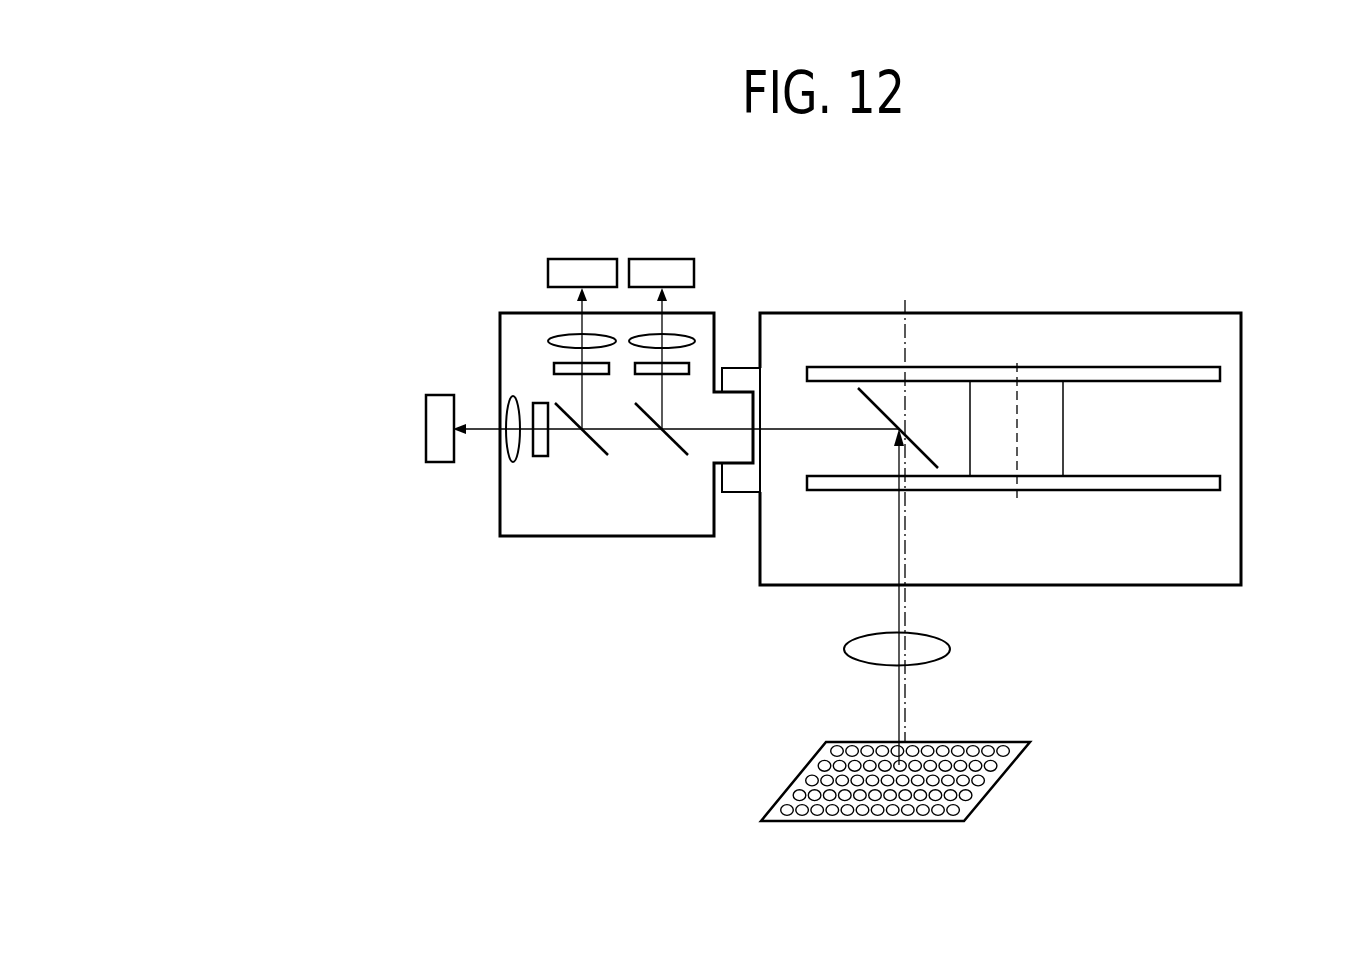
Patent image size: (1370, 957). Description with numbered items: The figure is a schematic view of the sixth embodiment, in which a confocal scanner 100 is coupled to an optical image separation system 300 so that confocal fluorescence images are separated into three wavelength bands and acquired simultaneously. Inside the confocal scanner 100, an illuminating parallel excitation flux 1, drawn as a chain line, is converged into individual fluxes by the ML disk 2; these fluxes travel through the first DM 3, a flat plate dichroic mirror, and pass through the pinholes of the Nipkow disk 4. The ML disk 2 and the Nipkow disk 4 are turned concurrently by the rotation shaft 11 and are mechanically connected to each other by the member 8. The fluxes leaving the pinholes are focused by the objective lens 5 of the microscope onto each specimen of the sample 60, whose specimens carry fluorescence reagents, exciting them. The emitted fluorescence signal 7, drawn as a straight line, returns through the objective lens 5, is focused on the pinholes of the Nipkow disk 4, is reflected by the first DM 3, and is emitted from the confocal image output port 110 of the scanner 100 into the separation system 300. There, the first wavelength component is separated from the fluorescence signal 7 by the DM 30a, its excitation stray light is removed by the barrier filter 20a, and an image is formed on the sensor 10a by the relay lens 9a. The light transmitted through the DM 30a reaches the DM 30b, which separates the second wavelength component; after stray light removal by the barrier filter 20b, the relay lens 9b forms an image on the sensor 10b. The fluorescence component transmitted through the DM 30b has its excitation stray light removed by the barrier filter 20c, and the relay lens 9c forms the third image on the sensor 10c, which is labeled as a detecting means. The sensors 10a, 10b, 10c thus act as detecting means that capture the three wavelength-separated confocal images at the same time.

The excitation flux 1 is at (908, 332).
The ML disk 2 is at (1190, 372).
The first DM 3 is at (886, 413).
The Nipkow disk 4 is at (1190, 480).
The objective lens 5 is at (951, 645).
The fluorescence signal 7 is at (788, 433).
The member 8 is at (1042, 400).
The rotation shaft 11 is at (1018, 495).
The sample 60 is at (1007, 768).
The confocal scanner 100 is at (1242, 402).
The confocal image output port 110 is at (737, 480).
The optical image separation system 300 is at (518, 537).
The relay lens 9a is at (687, 334).
The relay lens 9b is at (553, 338).
The relay lens 9c is at (511, 450).
The sensor 10a is at (661, 256).
The sensor 10b is at (582, 256).
The sensor 10c is at (423, 432).
The barrier filter 20a is at (690, 364).
The barrier filter 20b is at (554, 365).
The barrier filter 20c is at (538, 457).
The second DM 30a is at (664, 443).
The second DM 30b is at (586, 443).